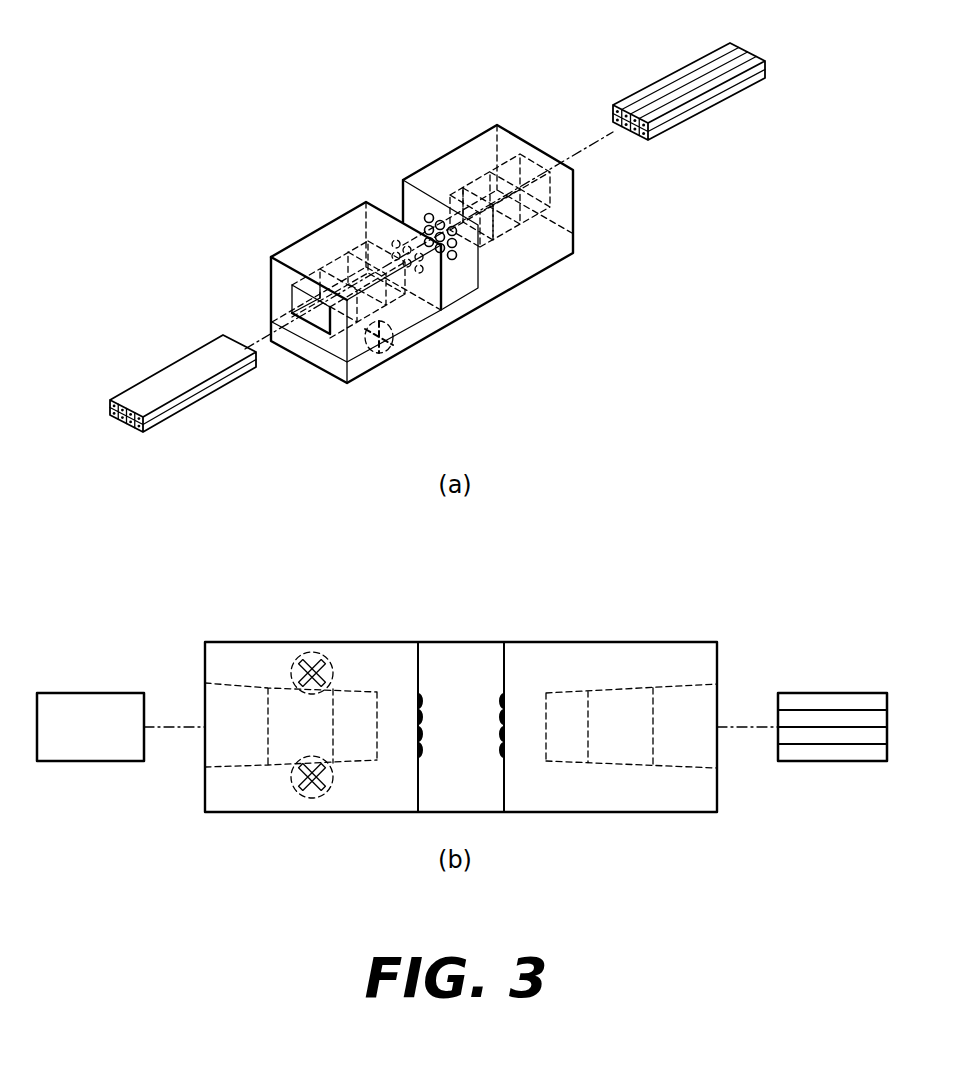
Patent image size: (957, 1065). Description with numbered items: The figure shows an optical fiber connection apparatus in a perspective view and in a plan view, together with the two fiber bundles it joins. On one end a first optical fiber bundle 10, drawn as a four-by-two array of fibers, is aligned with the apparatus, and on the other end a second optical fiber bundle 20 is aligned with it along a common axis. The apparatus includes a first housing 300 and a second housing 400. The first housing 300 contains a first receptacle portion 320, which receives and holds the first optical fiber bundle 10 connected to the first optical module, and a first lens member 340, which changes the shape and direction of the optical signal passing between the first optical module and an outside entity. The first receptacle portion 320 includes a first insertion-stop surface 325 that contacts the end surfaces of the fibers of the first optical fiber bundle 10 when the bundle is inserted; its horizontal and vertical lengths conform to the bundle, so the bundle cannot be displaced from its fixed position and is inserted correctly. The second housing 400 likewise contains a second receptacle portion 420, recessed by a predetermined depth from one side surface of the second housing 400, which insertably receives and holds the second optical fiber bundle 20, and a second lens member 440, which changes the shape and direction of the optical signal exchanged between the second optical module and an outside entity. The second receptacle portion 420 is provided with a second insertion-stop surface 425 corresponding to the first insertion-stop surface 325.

The first optical fiber bundle 10 is at (667, 78).
The second optical fiber bundle 20 is at (168, 373).
The first housing 300 is at (548, 282).
The first receptacle portion 320 is at (521, 162).
The first insertion-stop surface 325 is at (449, 200).
The first lens member 340 is at (428, 222).
The second housing 400 is at (280, 250).
The second receptacle portion 420 is at (320, 268).
The second insertion-stop surface 425 is at (364, 250).
The second lens member 440 is at (394, 242).